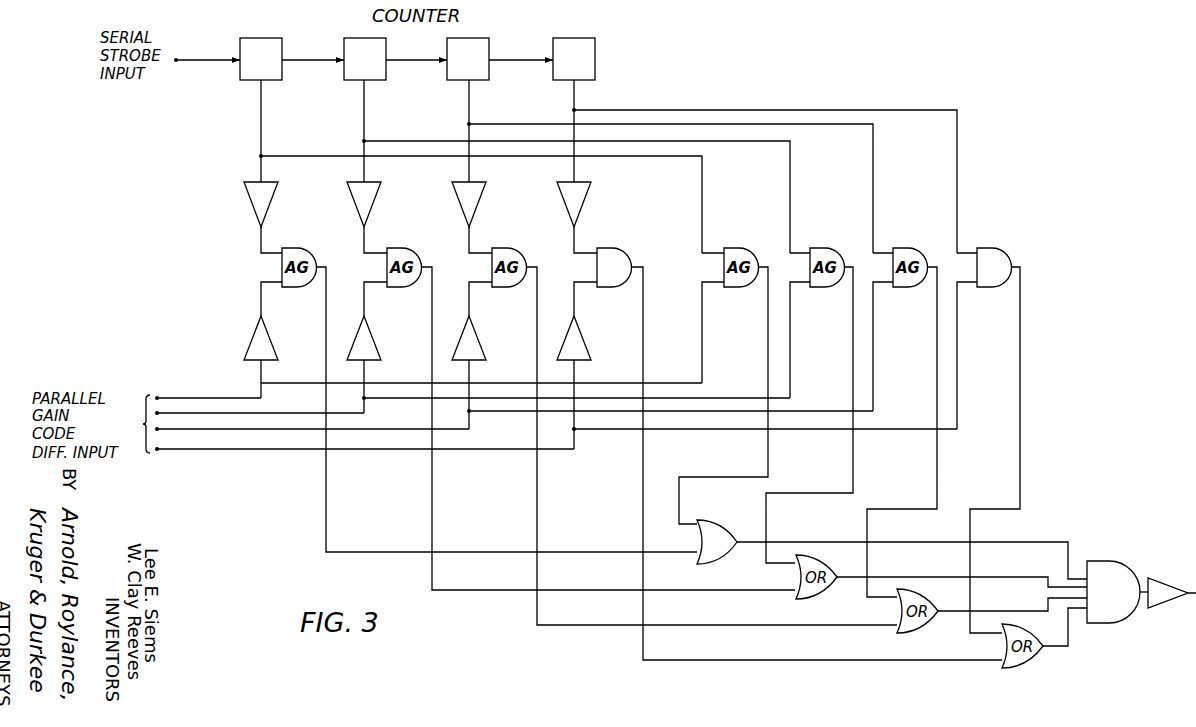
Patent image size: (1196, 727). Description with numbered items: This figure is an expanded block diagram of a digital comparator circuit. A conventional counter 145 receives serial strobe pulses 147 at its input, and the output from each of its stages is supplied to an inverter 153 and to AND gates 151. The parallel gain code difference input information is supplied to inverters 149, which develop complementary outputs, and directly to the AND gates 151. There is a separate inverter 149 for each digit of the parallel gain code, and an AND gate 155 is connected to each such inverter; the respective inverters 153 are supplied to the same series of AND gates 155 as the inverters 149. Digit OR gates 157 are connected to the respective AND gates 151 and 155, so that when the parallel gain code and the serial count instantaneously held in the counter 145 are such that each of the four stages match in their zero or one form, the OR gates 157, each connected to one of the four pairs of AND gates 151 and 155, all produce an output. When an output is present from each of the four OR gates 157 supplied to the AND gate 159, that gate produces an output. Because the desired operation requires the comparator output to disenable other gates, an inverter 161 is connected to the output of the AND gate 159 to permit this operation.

The counter 145 is at (616, 56).
The serial strobe pulses 147 is at (176, 90).
The inverter 149 is at (237, 341).
The AND gate 151 is at (1011, 247).
The inverter 153 is at (237, 200).
The AND gate 155 is at (616, 240).
The digit OR gate 157 is at (690, 541).
The AND gate 159 is at (1108, 557).
The inverter 161 is at (1166, 579).